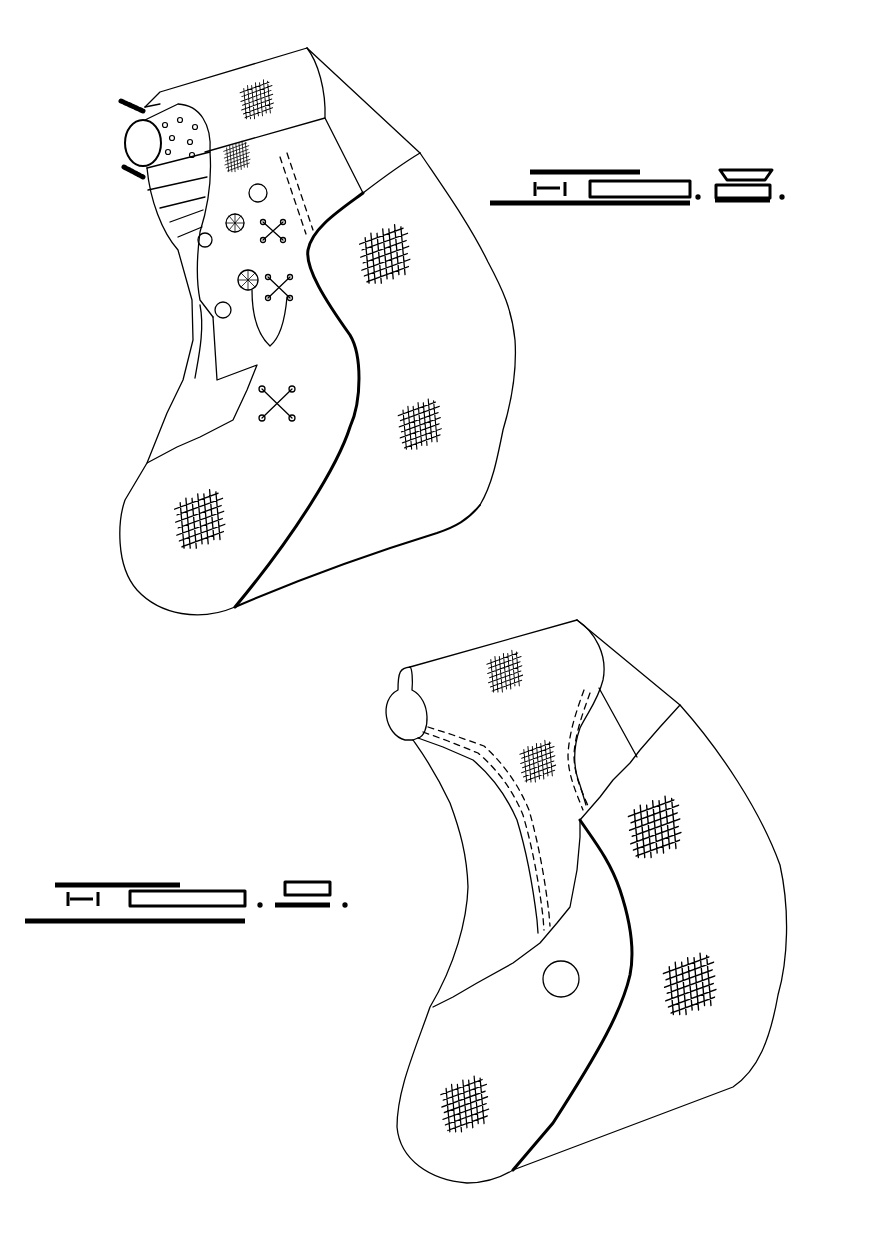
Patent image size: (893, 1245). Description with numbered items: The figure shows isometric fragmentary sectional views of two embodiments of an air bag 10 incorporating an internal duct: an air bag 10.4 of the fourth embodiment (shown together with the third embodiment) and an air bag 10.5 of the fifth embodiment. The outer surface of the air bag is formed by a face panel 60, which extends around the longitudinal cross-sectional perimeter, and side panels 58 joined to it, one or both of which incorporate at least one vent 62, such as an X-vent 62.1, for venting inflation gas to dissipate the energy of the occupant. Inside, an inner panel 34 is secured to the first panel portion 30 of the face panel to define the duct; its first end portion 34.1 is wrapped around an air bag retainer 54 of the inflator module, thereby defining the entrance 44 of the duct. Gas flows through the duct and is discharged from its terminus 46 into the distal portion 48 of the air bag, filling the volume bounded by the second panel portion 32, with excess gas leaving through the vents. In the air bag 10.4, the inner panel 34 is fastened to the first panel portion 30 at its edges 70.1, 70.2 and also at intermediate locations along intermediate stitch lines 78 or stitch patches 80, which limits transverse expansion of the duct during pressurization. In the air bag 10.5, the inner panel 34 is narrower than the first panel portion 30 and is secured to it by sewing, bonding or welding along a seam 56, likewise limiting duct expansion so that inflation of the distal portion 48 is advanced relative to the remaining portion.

In FIG. 8, the air bag 10 is at (513, 365).
In FIG. 9, the air bag 10 is at (738, 783).
In FIG. 8, the air bag 10.4 is at (392, 331).
In FIG. 9, the air bag 10.5 is at (606, 901).
In FIG. 8, the first panel portion 30 is at (163, 417).
In FIG. 9, the first panel portion 30 is at (437, 985).
In FIG. 8, the second panel portion 32 is at (488, 262).
In FIG. 9, the second panel portion 32 is at (780, 990).
In FIG. 8, the inner panel 34 is at (218, 182).
In FIG. 9, the inner panel 34 is at (525, 728).
In FIG. 8, the first end portion 34.1 is at (216, 62).
In FIG. 9, the first end portion 34.1 is at (540, 622).
In FIG. 9, the entrance 44 is at (388, 730).
In FIG. 9, the terminus 46 is at (532, 935).
In FIG. 9, the distal portion 48 is at (400, 1160).
In FIG. 8, the air bag retainer 54 is at (124, 143).
In FIG. 9, the seam 56 is at (500, 823).
In FIG. 8, the side panel 58 is at (392, 155).
In FIG. 9, the side panel 58 is at (655, 708).
In FIG. 8, the face panel 60 is at (330, 387).
In FIG. 9, the face panel 60 is at (557, 981).
In FIG. 8, the vent 62 is at (260, 184).
In FIG. 9, the vent 62 is at (560, 997).
In FIG. 8, the X-vent 62.1 is at (290, 230).
In FIG. 8, the edge 70.1 is at (197, 305).
In FIG. 8, the edge 70.2 is at (337, 140).
In FIG. 8, the intermediate stitch line 78 is at (310, 203).
In FIG. 8, the stitch patch 80 is at (226, 223).